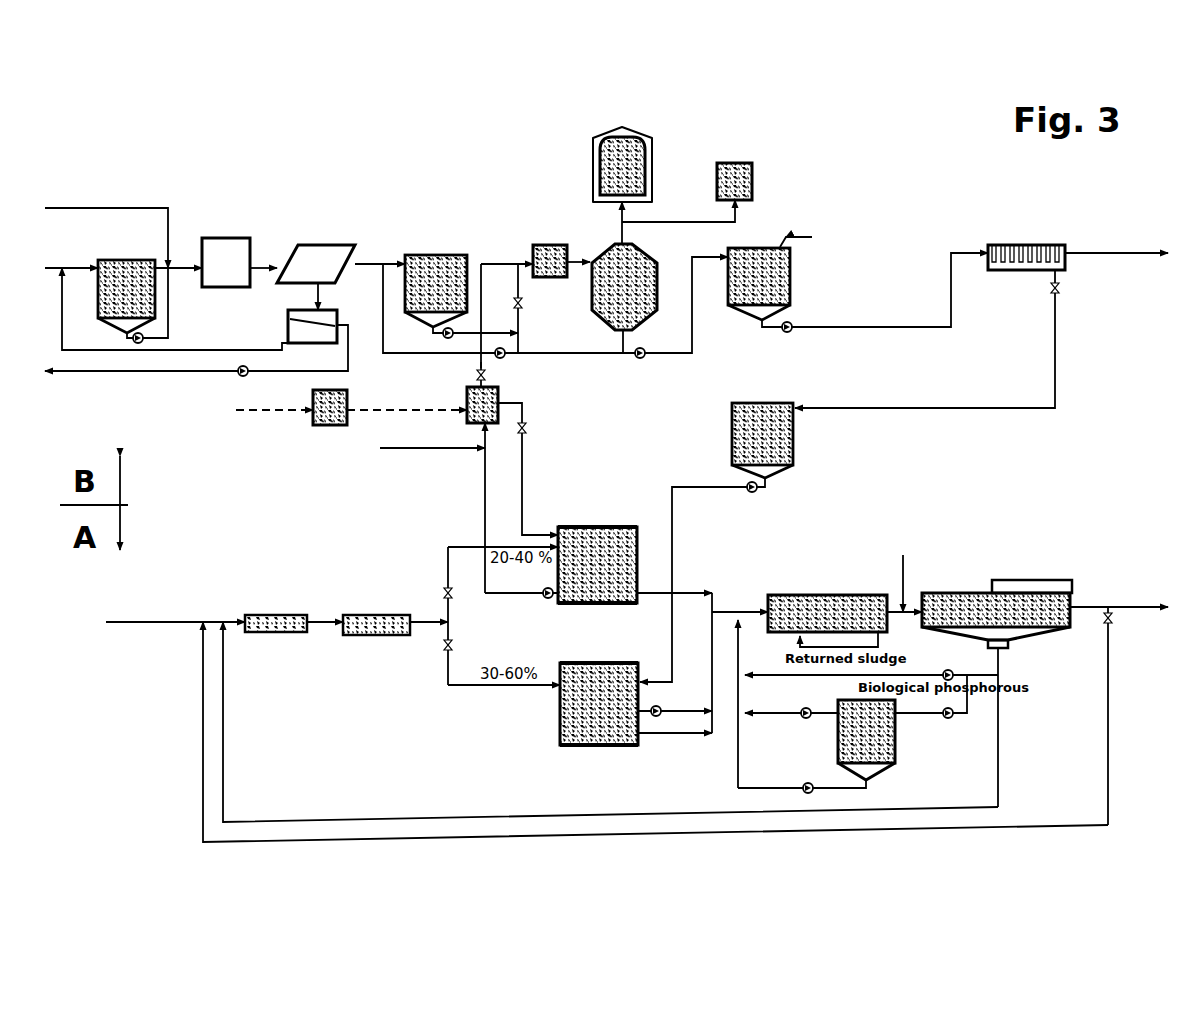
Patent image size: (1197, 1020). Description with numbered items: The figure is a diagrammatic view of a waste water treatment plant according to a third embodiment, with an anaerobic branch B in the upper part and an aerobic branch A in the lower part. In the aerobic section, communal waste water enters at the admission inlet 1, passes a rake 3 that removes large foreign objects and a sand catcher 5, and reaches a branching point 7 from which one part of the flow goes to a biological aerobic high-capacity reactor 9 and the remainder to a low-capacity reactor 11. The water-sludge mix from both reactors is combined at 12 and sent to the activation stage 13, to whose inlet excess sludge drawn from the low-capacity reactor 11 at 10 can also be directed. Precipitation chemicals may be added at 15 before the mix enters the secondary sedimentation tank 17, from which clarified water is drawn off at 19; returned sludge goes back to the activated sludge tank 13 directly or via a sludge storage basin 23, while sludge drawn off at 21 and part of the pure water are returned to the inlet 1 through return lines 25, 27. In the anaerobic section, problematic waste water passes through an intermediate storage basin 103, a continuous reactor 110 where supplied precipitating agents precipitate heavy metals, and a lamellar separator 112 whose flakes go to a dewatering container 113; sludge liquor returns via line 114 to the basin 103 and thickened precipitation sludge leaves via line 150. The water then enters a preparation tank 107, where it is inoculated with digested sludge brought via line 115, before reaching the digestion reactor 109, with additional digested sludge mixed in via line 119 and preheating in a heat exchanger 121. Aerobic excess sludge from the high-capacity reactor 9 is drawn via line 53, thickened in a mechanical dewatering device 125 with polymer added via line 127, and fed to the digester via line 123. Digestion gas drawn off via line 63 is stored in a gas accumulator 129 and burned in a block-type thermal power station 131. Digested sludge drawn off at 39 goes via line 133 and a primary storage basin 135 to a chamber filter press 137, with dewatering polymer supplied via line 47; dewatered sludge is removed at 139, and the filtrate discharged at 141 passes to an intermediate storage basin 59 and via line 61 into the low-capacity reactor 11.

The admission inlet 1 is at (121, 622).
The rake 3 is at (292, 615).
The sand catcher 5 is at (390, 615).
The branching point 7 is at (444, 617).
The high-capacity reactor 9 is at (570, 530).
The excess sludge draw-off 10 is at (675, 703).
The low-capacity reactor 11 is at (570, 665).
The combining point 12 is at (741, 612).
The activation stage 13 is at (852, 595).
The precipitation chemical addition point 15 is at (893, 583).
The secondary sedimentation tank 17 is at (980, 593).
The clarified water draw-off 19 is at (1121, 607).
The sludge draw-off 21 is at (1017, 720).
The sludge storage basin 23 is at (850, 716).
The return line 25 is at (610, 812).
The return line 27 is at (613, 834).
The digested sludge draw-off 39 is at (621, 342).
The polymer chemical supply line 47 is at (798, 231).
The excess sludge line 53 is at (500, 593).
The intermediate storage basin 59 is at (748, 408).
The discharge line 61 is at (695, 487).
The methane gas line 63 is at (620, 240).
The intermediate storage basin 103 is at (143, 263).
The preparation tank 107 is at (452, 258).
The digestion reactor 109 is at (641, 258).
The continuous reactor 110 is at (226, 246).
The lamellar separator 112 is at (318, 245).
The dewatering container 113 is at (288, 318).
The sludge liquor return line 114 is at (196, 350).
The digested sludge line 115 is at (503, 311).
The digested sludge line 119 is at (520, 349).
The heat exchanger 121 is at (566, 245).
The aerobic excess sludge line 123 is at (507, 306).
The mechanical dewatering device 125 is at (467, 405).
The dewatering additive line 127 is at (428, 448).
The gas accumulator 129 is at (632, 140).
The block-type thermal power station 131 is at (725, 163).
The digested sludge line 133 is at (655, 350).
The primary storage basin 135 is at (742, 258).
The chamber filter press 137 is at (1040, 245).
The dewatered sludge outlet 139 is at (1118, 253).
The filtrate discharge 141 is at (915, 408).
The precipitation sludge line 150 is at (196, 350).